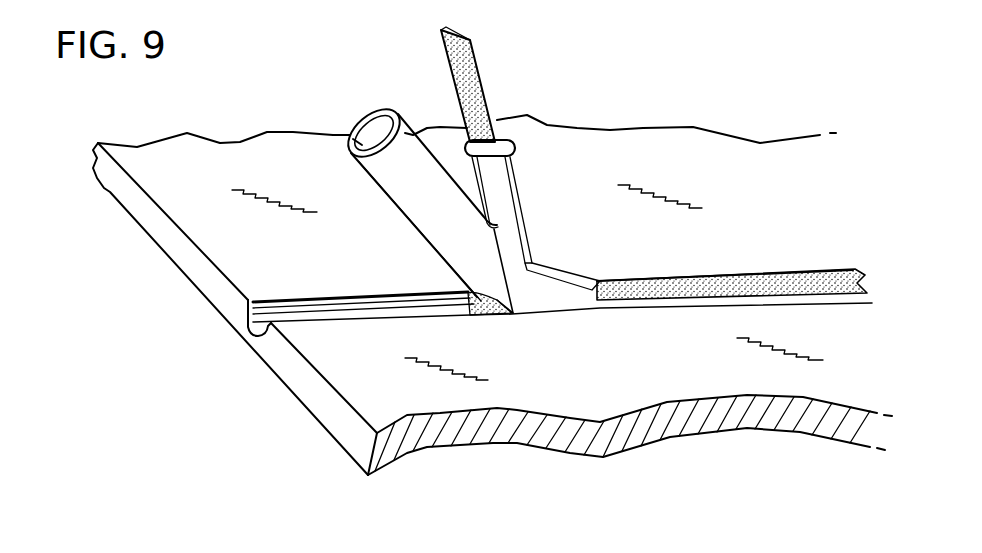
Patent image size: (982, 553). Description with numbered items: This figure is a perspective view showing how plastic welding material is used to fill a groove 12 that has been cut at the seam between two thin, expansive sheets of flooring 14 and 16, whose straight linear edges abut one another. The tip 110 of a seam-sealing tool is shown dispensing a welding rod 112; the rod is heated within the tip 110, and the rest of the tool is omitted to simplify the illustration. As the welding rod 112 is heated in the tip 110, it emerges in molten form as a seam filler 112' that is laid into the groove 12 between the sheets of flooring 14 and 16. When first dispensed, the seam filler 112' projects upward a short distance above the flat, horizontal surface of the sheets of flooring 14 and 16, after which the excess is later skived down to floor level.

The groove 12 is at (287, 312).
The sheet of flooring 14 is at (298, 163).
The sheet of flooring 16 is at (653, 389).
The tip 110 is at (440, 222).
The welding rod 112 is at (520, 158).
The seam filler 112' is at (667, 257).